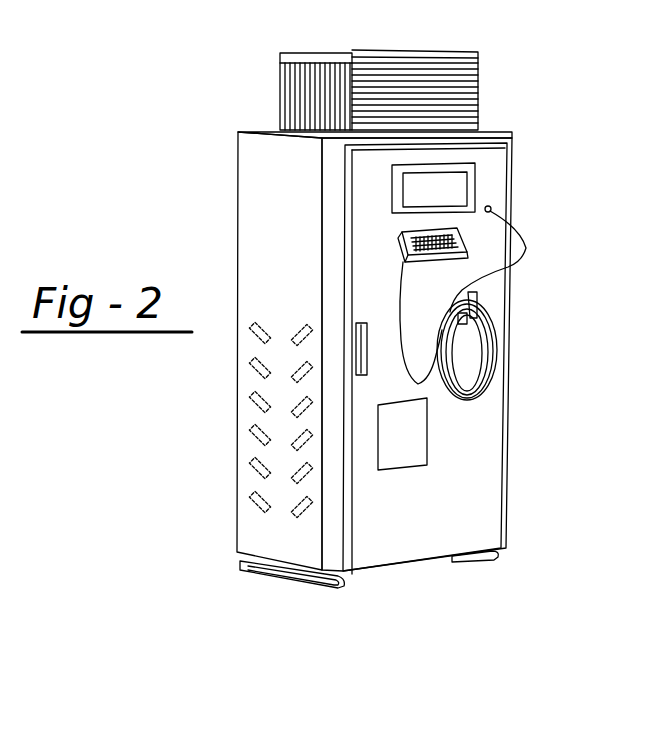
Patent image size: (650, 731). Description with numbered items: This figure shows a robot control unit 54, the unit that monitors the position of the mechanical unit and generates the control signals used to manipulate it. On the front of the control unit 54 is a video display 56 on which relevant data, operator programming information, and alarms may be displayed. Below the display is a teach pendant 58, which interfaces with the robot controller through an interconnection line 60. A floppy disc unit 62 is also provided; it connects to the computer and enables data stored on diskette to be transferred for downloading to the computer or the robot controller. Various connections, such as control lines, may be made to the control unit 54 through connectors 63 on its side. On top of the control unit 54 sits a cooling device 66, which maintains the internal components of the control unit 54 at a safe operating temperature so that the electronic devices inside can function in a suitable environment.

The control unit 54 is at (226, 103).
The video display 56 is at (460, 162).
The teach pendant 58 is at (413, 263).
The interconnection line 60 is at (512, 263).
The floppy disc unit 62 is at (367, 370).
The connectors 63 is at (252, 437).
The cooling device 66 is at (460, 80).